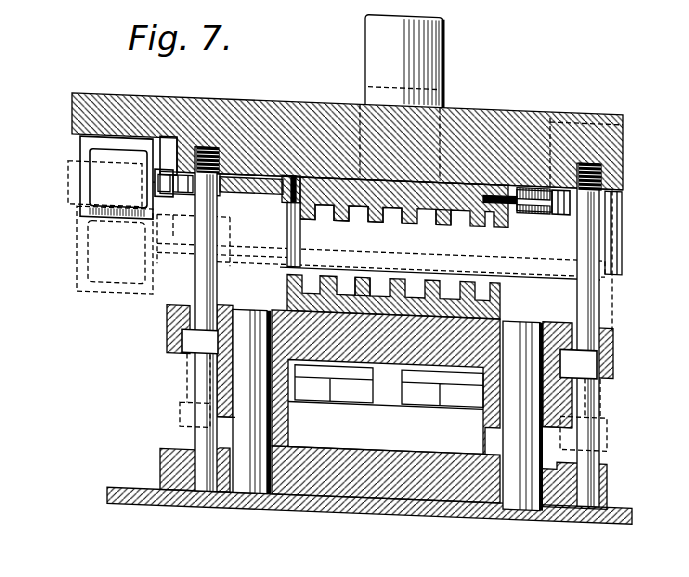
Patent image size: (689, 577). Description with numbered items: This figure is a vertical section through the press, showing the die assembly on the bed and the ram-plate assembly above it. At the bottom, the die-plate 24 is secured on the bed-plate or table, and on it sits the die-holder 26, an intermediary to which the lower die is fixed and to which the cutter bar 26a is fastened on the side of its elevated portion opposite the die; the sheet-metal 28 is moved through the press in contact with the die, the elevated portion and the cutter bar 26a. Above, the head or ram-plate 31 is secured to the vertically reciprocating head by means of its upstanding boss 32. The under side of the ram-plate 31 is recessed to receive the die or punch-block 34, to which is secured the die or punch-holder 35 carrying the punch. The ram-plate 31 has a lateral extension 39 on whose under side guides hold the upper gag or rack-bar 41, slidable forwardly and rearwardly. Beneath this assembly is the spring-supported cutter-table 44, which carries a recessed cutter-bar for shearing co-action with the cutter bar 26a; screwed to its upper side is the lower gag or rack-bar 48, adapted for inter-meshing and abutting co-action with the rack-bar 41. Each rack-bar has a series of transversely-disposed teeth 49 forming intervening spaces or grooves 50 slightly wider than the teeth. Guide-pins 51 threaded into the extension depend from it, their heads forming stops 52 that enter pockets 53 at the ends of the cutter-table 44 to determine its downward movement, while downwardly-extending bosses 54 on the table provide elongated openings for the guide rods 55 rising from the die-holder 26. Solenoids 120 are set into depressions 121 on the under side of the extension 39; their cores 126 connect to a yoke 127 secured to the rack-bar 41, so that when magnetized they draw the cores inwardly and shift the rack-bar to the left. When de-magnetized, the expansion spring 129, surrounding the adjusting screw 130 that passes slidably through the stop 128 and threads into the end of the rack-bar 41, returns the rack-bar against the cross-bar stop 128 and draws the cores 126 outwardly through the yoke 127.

The die-plate 24 is at (448, 507).
The die-holder 26 is at (303, 485).
The cutter bar 26a is at (377, 442).
The sheet-metal 28 is at (433, 407).
The head or ram-plate 31 is at (303, 115).
The upstanding boss 32 is at (448, 66).
The die or punch-block 34 is at (300, 227).
The die or punch-holder 35 is at (408, 269).
The lateral extension 39 is at (490, 123).
The gag or rack-bar 41 is at (432, 183).
The cutter-table 44 is at (363, 352).
The gag or rack-bar 48 is at (287, 293).
The teeth 49 is at (316, 271).
The spaces or grooves 50 is at (370, 280).
The guide-pins 51 is at (204, 276).
The stops 52 is at (190, 341).
The pockets 53 is at (172, 355).
The downwardly-extending bosses 54 is at (215, 420).
The guide rods 55 is at (257, 437).
The solenoids 120 is at (108, 188).
The depressions 121 is at (168, 143).
The cores 126 is at (157, 198).
The yoke 127 is at (246, 192).
The stop 128 is at (514, 187).
The expansion spring 129 is at (540, 217).
The adjusting screw 130 is at (520, 206).